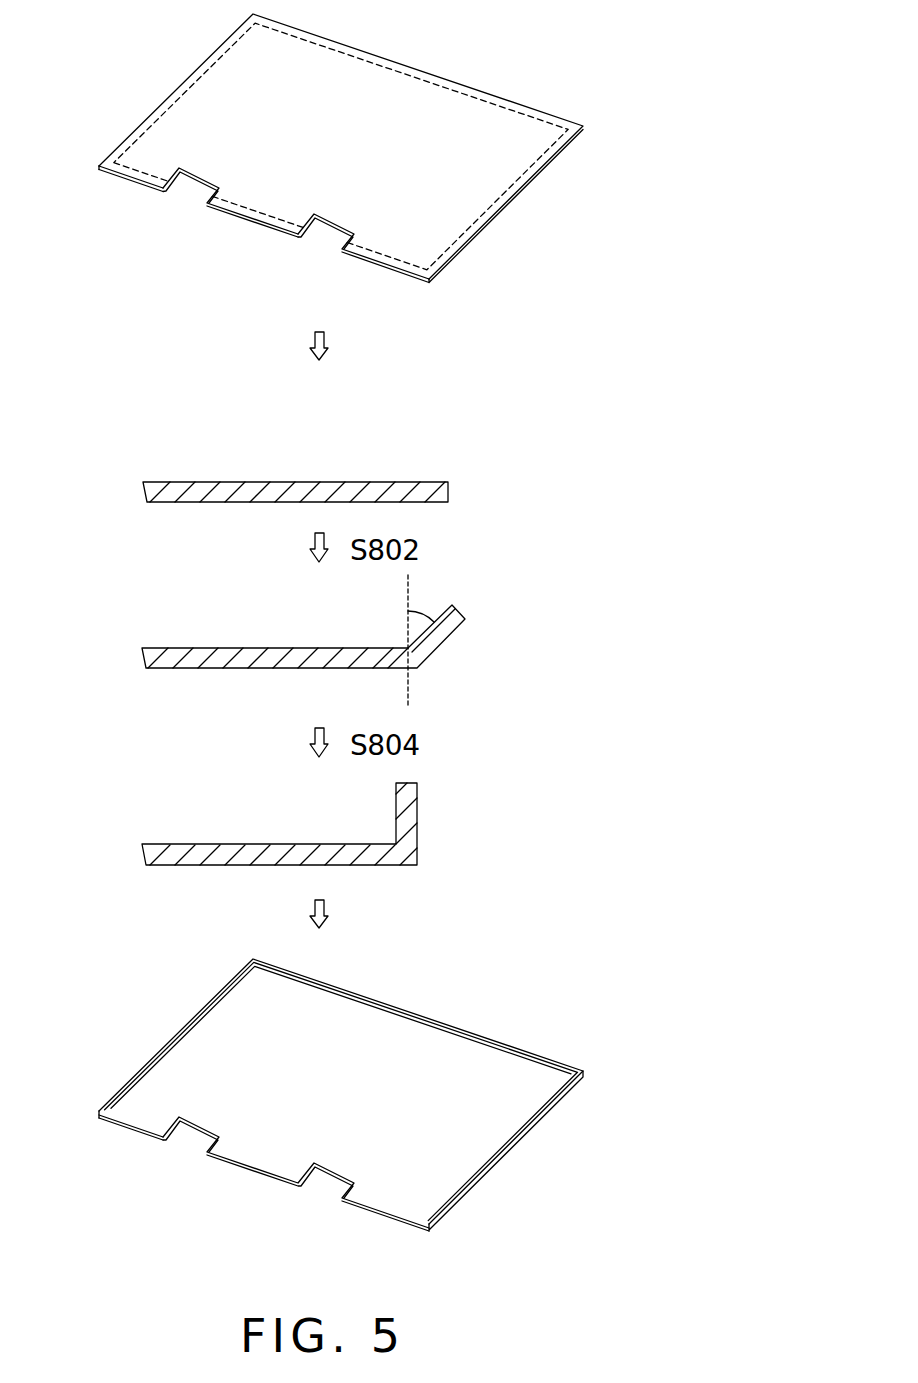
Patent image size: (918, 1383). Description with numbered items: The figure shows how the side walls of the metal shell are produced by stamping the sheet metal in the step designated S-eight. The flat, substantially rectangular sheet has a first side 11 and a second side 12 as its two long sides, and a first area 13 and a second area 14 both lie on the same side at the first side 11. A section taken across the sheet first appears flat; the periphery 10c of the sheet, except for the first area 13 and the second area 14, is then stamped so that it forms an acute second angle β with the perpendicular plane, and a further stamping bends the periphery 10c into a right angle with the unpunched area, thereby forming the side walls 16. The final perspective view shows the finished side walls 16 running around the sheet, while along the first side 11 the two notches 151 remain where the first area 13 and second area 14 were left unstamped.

The periphery 10c is at (167, 103).
The first side 11 is at (128, 182).
The second side 12 is at (403, 62).
The first area 13 is at (193, 194).
The second area 14 is at (320, 238).
The side walls 16 is at (422, 610).
The notches 151 is at (190, 1140).